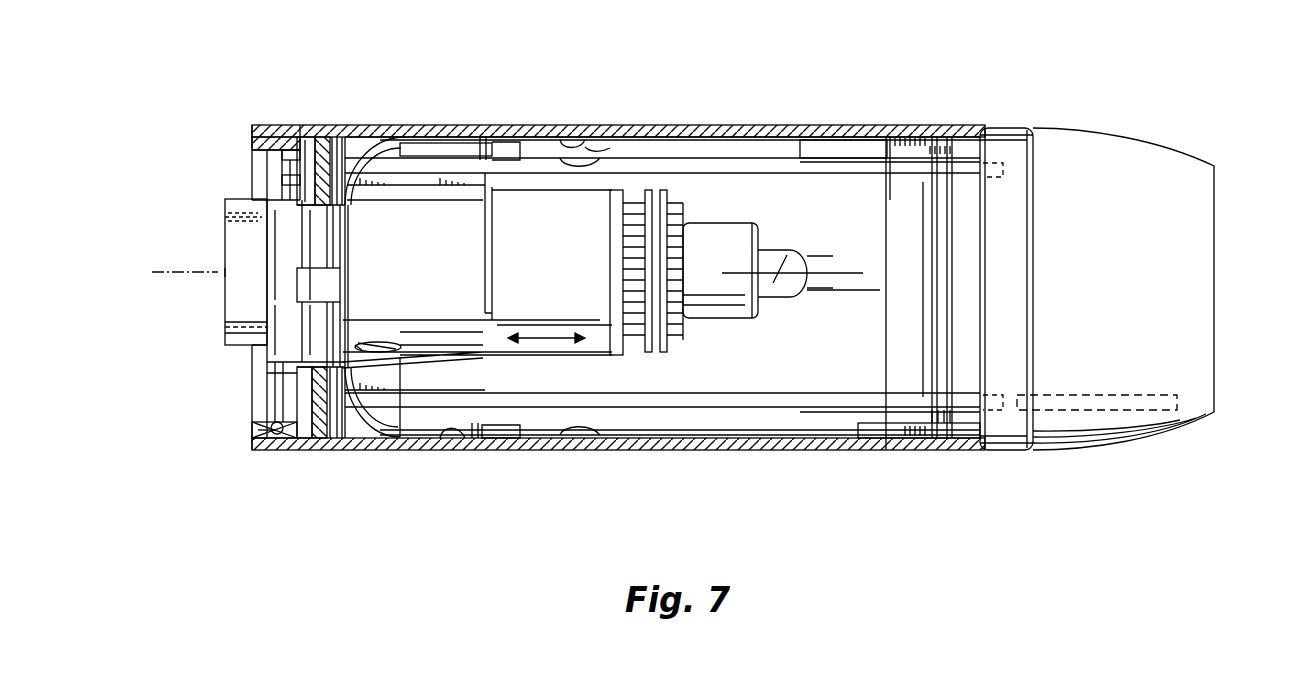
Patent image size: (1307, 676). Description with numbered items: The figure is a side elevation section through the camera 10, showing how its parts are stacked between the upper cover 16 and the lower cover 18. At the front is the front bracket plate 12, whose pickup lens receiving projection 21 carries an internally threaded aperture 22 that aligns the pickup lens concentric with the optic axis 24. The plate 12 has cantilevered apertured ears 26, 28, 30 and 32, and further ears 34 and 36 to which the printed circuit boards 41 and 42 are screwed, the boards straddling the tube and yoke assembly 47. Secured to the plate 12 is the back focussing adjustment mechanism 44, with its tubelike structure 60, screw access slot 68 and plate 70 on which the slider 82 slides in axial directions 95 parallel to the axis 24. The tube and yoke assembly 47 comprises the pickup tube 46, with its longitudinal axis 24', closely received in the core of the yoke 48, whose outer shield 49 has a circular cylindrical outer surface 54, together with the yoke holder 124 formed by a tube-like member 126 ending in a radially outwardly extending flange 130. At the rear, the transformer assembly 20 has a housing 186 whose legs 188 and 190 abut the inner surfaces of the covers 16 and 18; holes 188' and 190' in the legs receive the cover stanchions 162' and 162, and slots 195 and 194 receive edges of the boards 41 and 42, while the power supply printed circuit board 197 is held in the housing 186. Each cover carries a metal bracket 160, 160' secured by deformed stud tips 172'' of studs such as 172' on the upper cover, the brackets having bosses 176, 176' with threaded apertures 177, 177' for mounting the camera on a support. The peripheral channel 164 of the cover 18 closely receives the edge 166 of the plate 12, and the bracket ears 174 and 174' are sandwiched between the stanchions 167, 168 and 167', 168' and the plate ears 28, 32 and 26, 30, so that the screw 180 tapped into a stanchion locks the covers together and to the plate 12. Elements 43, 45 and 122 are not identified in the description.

The camera 10 is at (792, 100).
The front bracket plate 12 is at (298, 243).
The upper cover 16 is at (722, 136).
The lower cover 18 is at (666, 440).
The transformer assembly 20 is at (1230, 275).
The pickup lens receiving projection 21 is at (226, 332).
The internally threaded aperture 22 is at (225, 218).
The optic axis 24 is at (188, 290).
The longitudinal axis 24' is at (798, 261).
The cantilevered apertured ear 26 is at (340, 250).
The cantilevered apertured ear 28 is at (315, 344).
The cantilevered apertured ear 30 is at (340, 270).
The cantilevered apertured ear 32 is at (312, 318).
The cantilevered apertured ear 34 is at (287, 181).
The cantilevered apertured ear 36 is at (285, 387).
The printed circuit board 41 is at (775, 176).
The printed circuit board 42 is at (776, 395).
The ring 43 is at (287, 157).
The back focussing adjustment mechanism 44 is at (416, 118).
The ring 45 is at (288, 405).
The pickup tube 46 is at (760, 238).
The tube and yoke assembly 47 is at (688, 220).
The yoke 48 is at (663, 352).
The outer shield 49 is at (613, 354).
The circular cylindrical outer surface 54 is at (568, 355).
The tubelike structure 60 is at (391, 440).
The screw access slot 68 is at (398, 347).
The plate 70 is at (428, 190).
The slider 82 is at (450, 140).
The axial directions 95 is at (550, 335).
The reflector housing 122 is at (498, 180).
The yoke holder 124 is at (530, 282).
The circular cylindrical tube-like member 126 is at (485, 362).
The radially outwardly extending flange 130 is at (488, 258).
The metal bracket 160 is at (441, 458).
The metal bracket 160' is at (585, 116).
The cylindrical apertured stanchion 162 is at (893, 287).
The cylindrical apertured stanchion 162' is at (866, 293).
The peripheral channel 164 is at (269, 450).
The edge 166 is at (265, 433).
The circular cylindrical stanchion 167 is at (327, 427).
The circular cylindrical stanchion 167' is at (340, 143).
The circular cylindrical stanchion 168 is at (294, 427).
The circular cylindrical stanchion 168' is at (303, 143).
The upstanding stud 172' is at (605, 150).
The deformed stud tip 172'' is at (609, 427).
The upstanding ear 174 is at (339, 337).
The upstanding ear 174' is at (342, 217).
The boss 176 is at (509, 456).
The boss 176' is at (521, 121).
The threaded aperture 177 is at (474, 455).
The threaded aperture 177' is at (489, 121).
The screw 180 is at (328, 124).
The transformer housing 186 is at (1200, 154).
The leg 188 is at (843, 150).
The hole 188' is at (911, 118).
The leg 190 is at (891, 425).
The hole 190' is at (925, 449).
The coplanar slots 194 is at (990, 400).
The coplanar slots 195 is at (1000, 180).
The printed circuit board 197 is at (1118, 395).